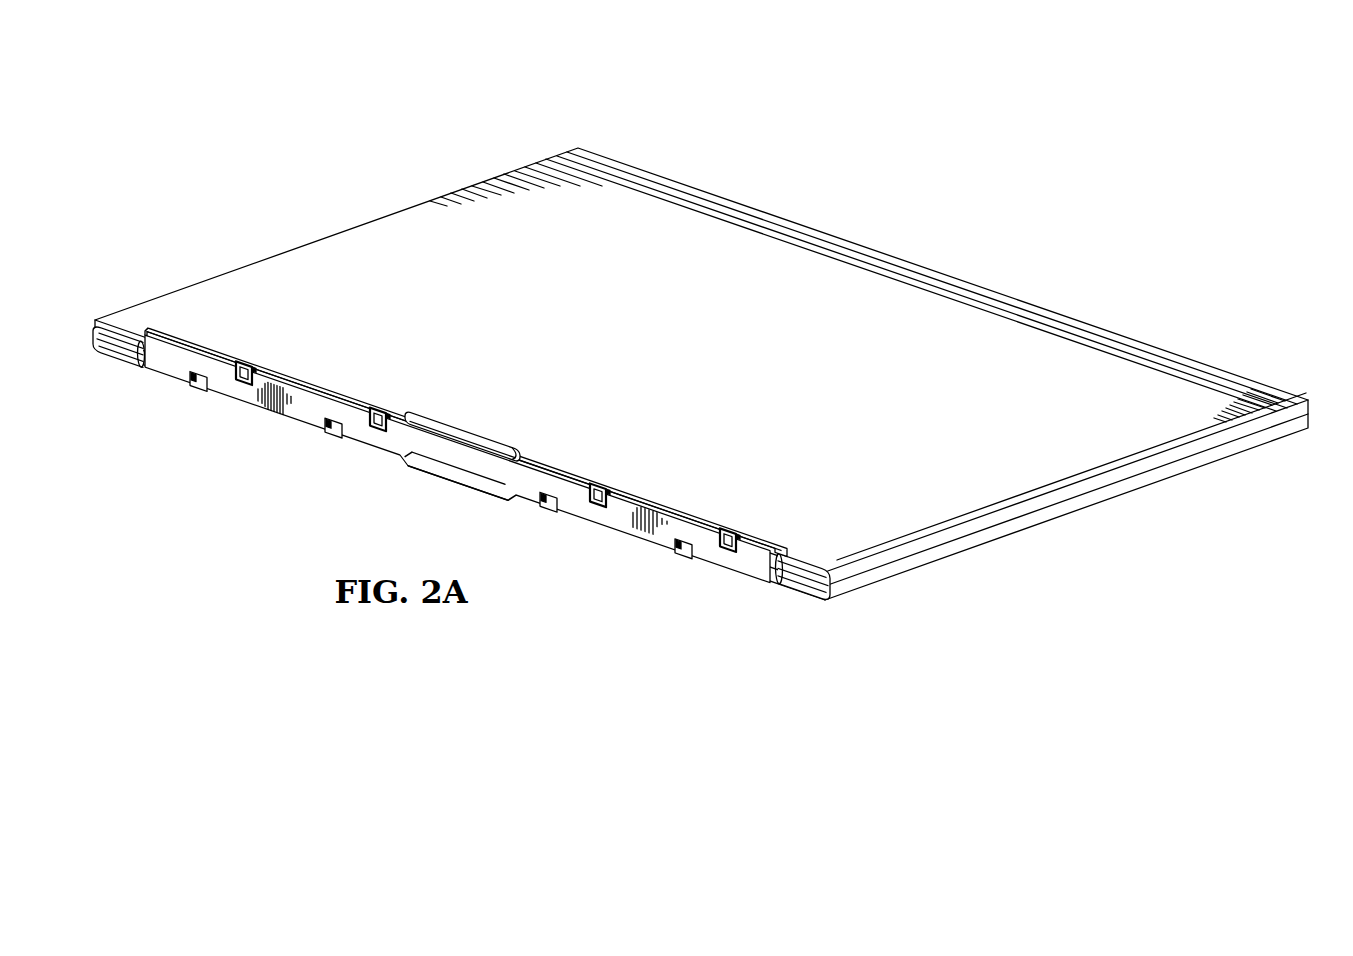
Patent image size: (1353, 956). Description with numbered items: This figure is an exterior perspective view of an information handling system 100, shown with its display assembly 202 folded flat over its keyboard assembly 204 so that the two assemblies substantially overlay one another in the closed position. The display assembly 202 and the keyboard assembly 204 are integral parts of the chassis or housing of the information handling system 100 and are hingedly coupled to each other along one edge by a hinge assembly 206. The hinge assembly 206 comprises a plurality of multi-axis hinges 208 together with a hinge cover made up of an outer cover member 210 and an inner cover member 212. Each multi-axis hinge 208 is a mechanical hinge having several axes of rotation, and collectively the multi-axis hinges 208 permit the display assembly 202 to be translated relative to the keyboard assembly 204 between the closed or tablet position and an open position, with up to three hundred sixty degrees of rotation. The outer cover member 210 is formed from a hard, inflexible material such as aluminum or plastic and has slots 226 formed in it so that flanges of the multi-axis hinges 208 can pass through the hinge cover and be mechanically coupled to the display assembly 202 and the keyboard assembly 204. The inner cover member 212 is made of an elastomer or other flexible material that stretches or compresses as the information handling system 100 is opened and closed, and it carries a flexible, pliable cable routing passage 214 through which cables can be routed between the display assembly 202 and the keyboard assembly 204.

The information handling system 100 is at (390, 88).
The display assembly 202 is at (940, 278).
The keyboard assembly 204 is at (1000, 540).
The hinge assembly 206 is at (756, 586).
The multi-axis hinges 208 is at (249, 361).
The outer cover member 210 is at (276, 414).
The inner cover member 212 is at (481, 449).
The cable routing passage 214 is at (438, 461).
The slots 226 is at (262, 363).